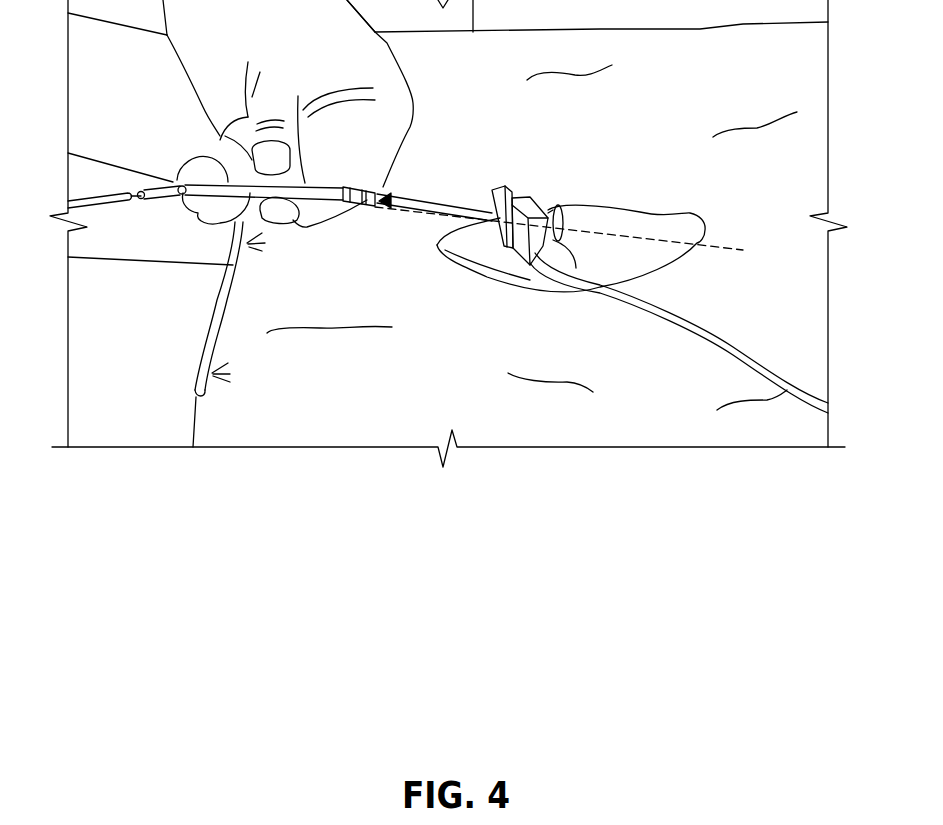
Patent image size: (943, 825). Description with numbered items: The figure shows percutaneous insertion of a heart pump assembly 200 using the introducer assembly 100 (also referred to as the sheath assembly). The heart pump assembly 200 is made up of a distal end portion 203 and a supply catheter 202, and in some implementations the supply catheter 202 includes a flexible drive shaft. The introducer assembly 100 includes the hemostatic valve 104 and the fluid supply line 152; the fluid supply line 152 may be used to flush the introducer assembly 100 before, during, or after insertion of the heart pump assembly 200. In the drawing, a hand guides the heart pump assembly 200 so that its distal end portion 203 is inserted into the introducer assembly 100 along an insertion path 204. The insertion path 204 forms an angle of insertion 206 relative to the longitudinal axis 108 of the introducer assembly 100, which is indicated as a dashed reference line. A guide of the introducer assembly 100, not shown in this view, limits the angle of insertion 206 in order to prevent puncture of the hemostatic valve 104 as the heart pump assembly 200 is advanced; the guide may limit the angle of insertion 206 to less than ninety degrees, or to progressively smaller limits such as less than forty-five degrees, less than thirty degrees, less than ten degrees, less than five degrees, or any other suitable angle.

The introducer assembly 100 is at (531, 190).
The hemostatic valve 104 is at (498, 228).
The longitudinal axis 108 is at (615, 235).
The fluid supply line 152 is at (771, 365).
The heart pump assembly 200 is at (190, 178).
The supply catheter 202 is at (78, 194).
The distal end portion 203 is at (422, 207).
The insertion path 204 is at (435, 200).
The angle of insertion 206 is at (385, 197).